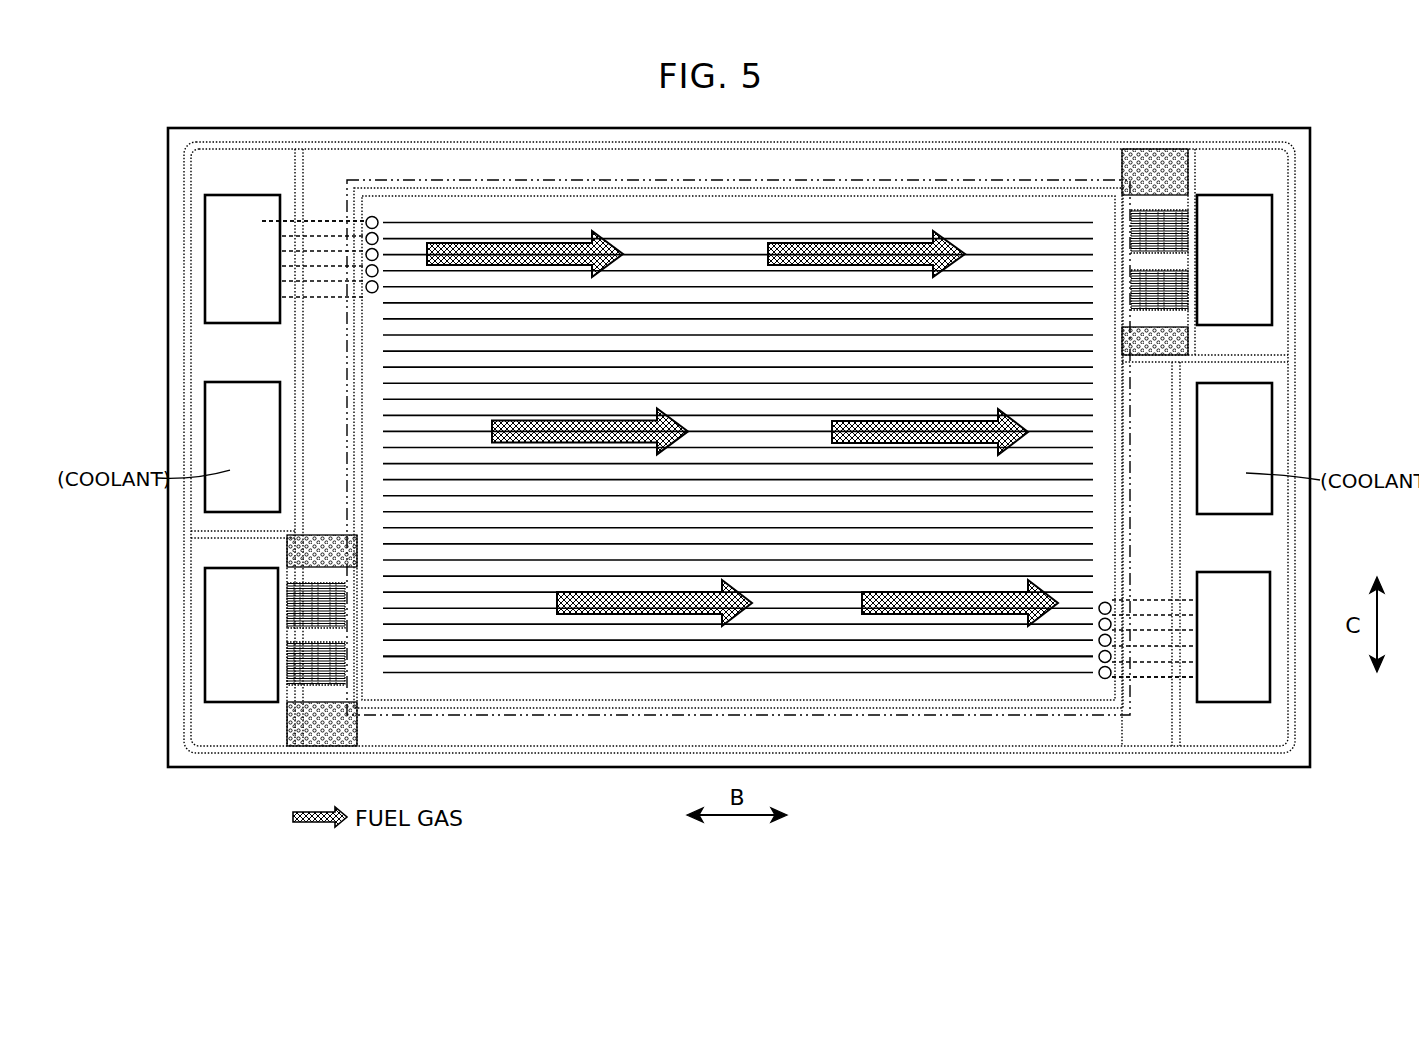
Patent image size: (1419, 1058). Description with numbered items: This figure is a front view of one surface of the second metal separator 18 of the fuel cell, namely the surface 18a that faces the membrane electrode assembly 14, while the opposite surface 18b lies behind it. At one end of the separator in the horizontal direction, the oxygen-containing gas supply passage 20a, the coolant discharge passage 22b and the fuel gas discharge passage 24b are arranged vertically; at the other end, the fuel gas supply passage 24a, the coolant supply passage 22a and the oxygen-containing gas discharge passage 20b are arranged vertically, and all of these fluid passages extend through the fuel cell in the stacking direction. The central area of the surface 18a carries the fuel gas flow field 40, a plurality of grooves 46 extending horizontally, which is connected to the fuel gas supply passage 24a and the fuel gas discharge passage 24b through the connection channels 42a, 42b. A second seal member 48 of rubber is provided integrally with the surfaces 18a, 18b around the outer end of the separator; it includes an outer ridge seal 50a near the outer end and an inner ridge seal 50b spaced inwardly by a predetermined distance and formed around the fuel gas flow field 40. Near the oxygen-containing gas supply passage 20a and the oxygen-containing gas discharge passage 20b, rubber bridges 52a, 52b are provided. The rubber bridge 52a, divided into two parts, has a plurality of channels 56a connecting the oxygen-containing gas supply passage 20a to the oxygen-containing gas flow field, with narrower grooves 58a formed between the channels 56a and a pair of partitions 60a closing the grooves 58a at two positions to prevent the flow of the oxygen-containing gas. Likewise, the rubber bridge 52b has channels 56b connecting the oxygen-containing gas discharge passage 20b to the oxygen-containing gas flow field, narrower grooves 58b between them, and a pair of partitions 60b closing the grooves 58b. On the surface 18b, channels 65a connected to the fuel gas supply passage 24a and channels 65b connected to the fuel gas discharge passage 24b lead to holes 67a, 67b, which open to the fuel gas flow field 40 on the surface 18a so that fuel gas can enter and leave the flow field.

The membrane electrode assembly 14 is at (1012, 178).
The second metal separator 18 is at (1072, 96).
The surface 18a is at (874, 733).
The surface 18b is at (932, 735).
The oxygen-containing gas supply passage 20a is at (1234, 260).
The oxygen-containing gas discharge passage 20b is at (241, 635).
The coolant supply passage 22a is at (242, 447).
The coolant discharge passage 22b is at (1234, 448).
The fuel gas supply passage 24a is at (242, 259).
The fuel gas discharge passage 24b is at (1233, 637).
The fuel gas flow field 40 is at (518, 632).
The connection channel 42a is at (392, 290).
The connection channel 42b is at (1088, 605).
The fuel gas flow grooves 46 is at (596, 632).
The second seal member 48 is at (850, 165).
The outer ridge seal 50a is at (468, 145).
The inner ridge seal 50b is at (526, 190).
The rubber bridge 52a is at (1178, 212).
The rubber bridge 52b is at (298, 686).
The channels 56a is at (1160, 318).
The channels 56b is at (312, 578).
The grooves 58a is at (1175, 220).
The grooves 58b is at (298, 672).
The partitions 60a is at (1148, 222).
The partitions 60b is at (330, 678).
The channels 65a is at (292, 220).
The channels 65b is at (1190, 672).
The holes 67a is at (372, 214).
The holes 67b is at (1108, 684).